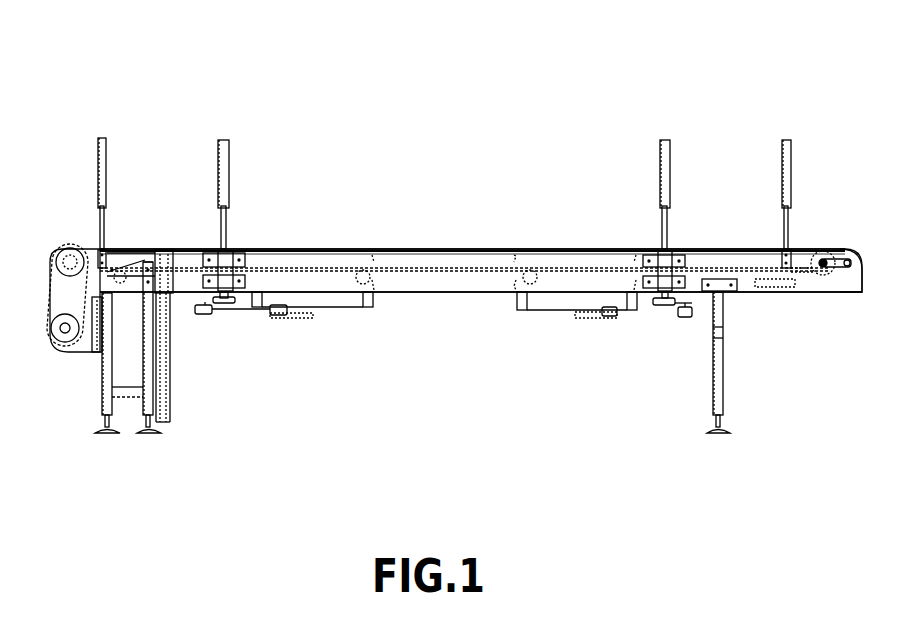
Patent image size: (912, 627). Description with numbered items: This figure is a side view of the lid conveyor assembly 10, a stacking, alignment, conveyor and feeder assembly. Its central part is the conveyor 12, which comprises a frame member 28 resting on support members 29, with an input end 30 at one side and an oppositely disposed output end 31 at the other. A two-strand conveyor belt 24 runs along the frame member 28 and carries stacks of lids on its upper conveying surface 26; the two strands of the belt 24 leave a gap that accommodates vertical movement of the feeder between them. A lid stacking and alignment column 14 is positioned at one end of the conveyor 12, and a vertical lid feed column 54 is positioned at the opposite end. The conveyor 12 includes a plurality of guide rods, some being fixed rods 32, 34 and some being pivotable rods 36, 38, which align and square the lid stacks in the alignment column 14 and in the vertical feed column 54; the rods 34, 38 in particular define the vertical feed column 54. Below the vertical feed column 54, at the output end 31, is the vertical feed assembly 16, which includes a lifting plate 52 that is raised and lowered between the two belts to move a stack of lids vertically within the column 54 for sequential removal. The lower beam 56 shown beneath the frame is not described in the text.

The assembly 10 is at (438, 150).
The conveyor 12 is at (536, 235).
The lid stacking and alignment column 14 is at (752, 128).
The vertical feed assembly 16 is at (172, 380).
The two-strand conveyor belt 24 is at (483, 250).
The upper conveying surface 26 is at (408, 248).
The frame member 28 is at (417, 293).
The support members 29 is at (102, 392).
The input end 30 is at (833, 293).
The output end 31 is at (93, 248).
The fixed rod 32 is at (793, 158).
The fixed rod 34 is at (98, 192).
The pivotable rod 36 is at (658, 158).
The pivotable rod 38 is at (230, 162).
The lifting plate 52 is at (163, 250).
The vertical lid feed column 54 is at (160, 145).
The lower beam 56 is at (444, 305).